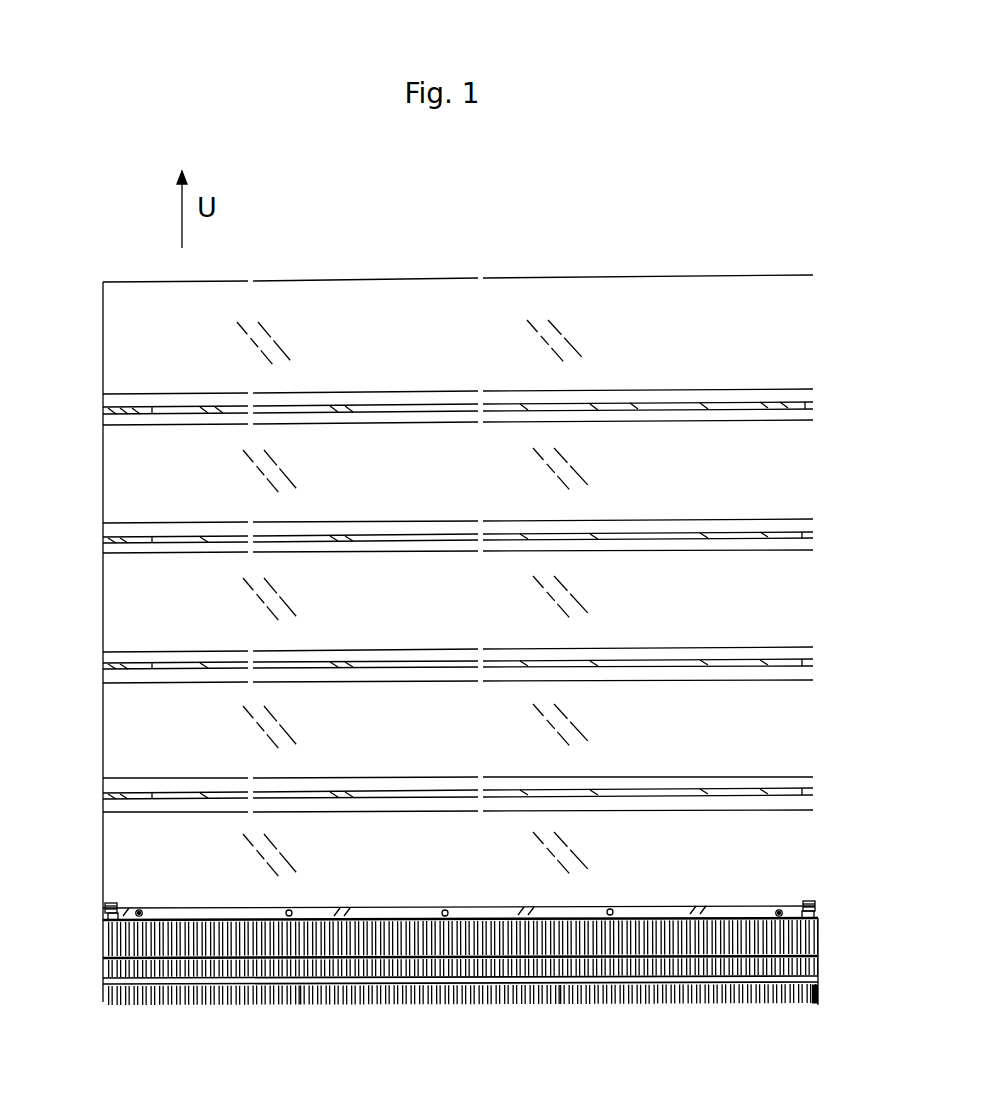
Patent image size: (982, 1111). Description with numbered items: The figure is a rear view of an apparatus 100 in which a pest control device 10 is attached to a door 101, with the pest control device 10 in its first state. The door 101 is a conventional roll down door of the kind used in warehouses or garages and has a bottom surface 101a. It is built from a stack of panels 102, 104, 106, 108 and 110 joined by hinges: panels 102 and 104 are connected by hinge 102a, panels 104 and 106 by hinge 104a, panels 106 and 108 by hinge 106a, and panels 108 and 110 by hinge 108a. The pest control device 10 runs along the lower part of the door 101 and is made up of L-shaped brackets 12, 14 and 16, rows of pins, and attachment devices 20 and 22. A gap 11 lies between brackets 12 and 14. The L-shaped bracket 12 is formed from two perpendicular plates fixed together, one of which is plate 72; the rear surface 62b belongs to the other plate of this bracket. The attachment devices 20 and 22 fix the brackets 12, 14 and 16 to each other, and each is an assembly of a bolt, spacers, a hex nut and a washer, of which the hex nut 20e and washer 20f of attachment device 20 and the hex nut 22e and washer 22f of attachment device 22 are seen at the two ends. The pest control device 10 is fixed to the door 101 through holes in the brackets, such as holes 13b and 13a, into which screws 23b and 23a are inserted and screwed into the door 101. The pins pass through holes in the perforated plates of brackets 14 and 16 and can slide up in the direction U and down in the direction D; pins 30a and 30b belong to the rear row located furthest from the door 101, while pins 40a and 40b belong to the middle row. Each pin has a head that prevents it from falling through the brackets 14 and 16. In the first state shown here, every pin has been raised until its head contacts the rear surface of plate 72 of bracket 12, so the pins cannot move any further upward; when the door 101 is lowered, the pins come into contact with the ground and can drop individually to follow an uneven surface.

The apparatus 100 is at (658, 228).
The door 101 is at (714, 266).
The bottom surface 101a is at (107, 992).
The panel 102 is at (783, 335).
The hinge 102a is at (800, 398).
The panel 104 is at (790, 492).
The hinge 104a is at (805, 527).
The panel 106 is at (788, 603).
The hinge 106a is at (797, 657).
The panel 108 is at (790, 737).
The hinge 108a is at (805, 788).
The panel 110 is at (808, 819).
The pest control device 10 is at (649, 892).
The gap 11 is at (820, 930).
The L-shaped bracket 12 is at (411, 911).
The hole 13a is at (776, 910).
The hole 13b is at (143, 911).
The L-shaped bracket 14 is at (103, 948).
The L-shaped bracket 16 is at (103, 970).
The attachment device 20 is at (801, 888).
The hex nut 20e is at (816, 901).
The washer 20f is at (819, 916).
The attachment device 22 is at (119, 890).
The hex nut 22e is at (105, 909).
The washer 22f is at (111, 920).
The screw 23a is at (778, 910).
The screw 23b is at (141, 910).
The pin 30a is at (815, 1005).
The pin 30b is at (122, 1007).
The pin 40a is at (808, 1005).
The pin 40b is at (112, 1007).
The rear surface 62b is at (359, 911).
The plate 72 is at (474, 918).